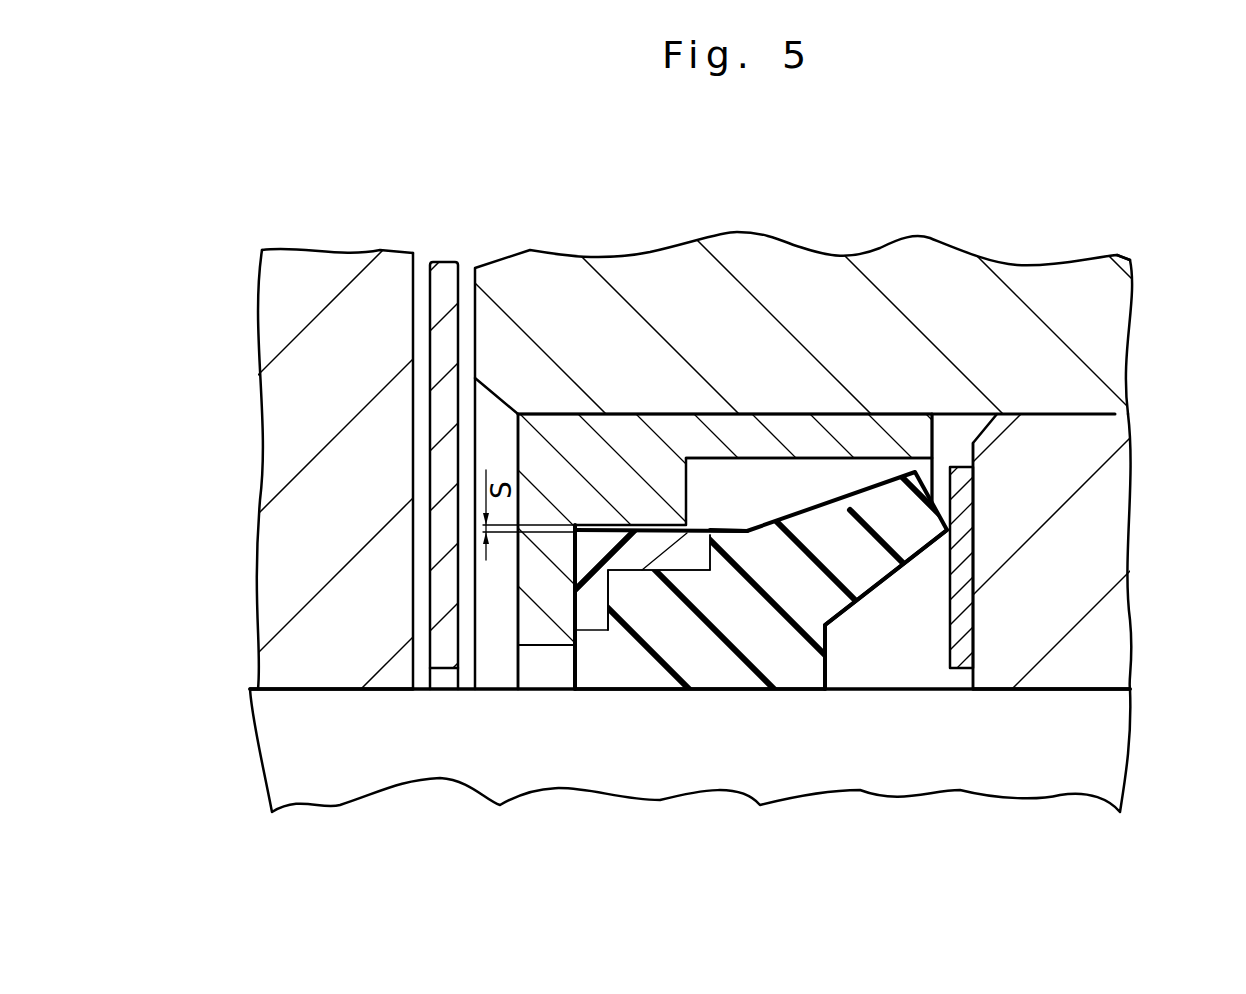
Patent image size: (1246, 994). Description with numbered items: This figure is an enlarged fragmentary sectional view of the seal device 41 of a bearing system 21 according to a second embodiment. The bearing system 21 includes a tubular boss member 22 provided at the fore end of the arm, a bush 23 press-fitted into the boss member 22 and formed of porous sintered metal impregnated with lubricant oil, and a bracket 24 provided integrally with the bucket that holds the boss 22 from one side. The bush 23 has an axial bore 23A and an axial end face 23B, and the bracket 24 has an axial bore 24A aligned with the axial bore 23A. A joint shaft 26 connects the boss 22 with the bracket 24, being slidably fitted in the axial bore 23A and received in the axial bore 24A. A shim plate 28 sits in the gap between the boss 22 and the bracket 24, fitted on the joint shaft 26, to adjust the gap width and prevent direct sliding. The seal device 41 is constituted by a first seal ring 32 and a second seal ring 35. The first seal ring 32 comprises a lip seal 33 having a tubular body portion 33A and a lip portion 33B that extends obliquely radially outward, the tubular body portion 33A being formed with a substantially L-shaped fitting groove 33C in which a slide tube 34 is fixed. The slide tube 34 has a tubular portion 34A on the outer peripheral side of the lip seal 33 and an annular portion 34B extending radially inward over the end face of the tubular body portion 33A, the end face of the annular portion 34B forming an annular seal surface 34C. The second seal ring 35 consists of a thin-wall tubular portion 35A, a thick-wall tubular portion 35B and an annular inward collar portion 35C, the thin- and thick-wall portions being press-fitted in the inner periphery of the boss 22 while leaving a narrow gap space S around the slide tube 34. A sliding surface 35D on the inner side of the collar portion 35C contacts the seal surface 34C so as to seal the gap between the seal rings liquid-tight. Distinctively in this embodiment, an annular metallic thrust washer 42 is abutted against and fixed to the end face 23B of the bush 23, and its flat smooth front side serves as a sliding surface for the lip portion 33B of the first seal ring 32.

The bearing system 21 is at (1124, 250).
The boss member 22 is at (1049, 278).
The bush 23 is at (1102, 544).
The axial bore 23A is at (1100, 690).
The axial end face 23B is at (967, 643).
The bracket 24 is at (293, 315).
The axial bore 24A is at (295, 690).
The joint shaft 26 is at (317, 787).
The shim plate 28 is at (444, 272).
The first seal ring 32 is at (734, 520).
The lip seal 33 is at (812, 625).
The tubular body portion 33A is at (778, 667).
The lip portion 33B is at (883, 562).
The fitting groove 33C is at (592, 607).
The slide tube 34 is at (675, 557).
The tubular portion 34A is at (693, 550).
The annular portion 34B is at (592, 607).
The annular seal surface 34C is at (577, 600).
The second seal ring 35 is at (721, 432).
The thin-wall tubular portion 35A is at (908, 443).
The thick-wall tubular portion 35B is at (647, 450).
The annular inward collar portion 35C is at (540, 585).
The sliding surface 35D is at (578, 548).
The seal device 41 is at (860, 406).
The thrust washer 42 is at (953, 617).